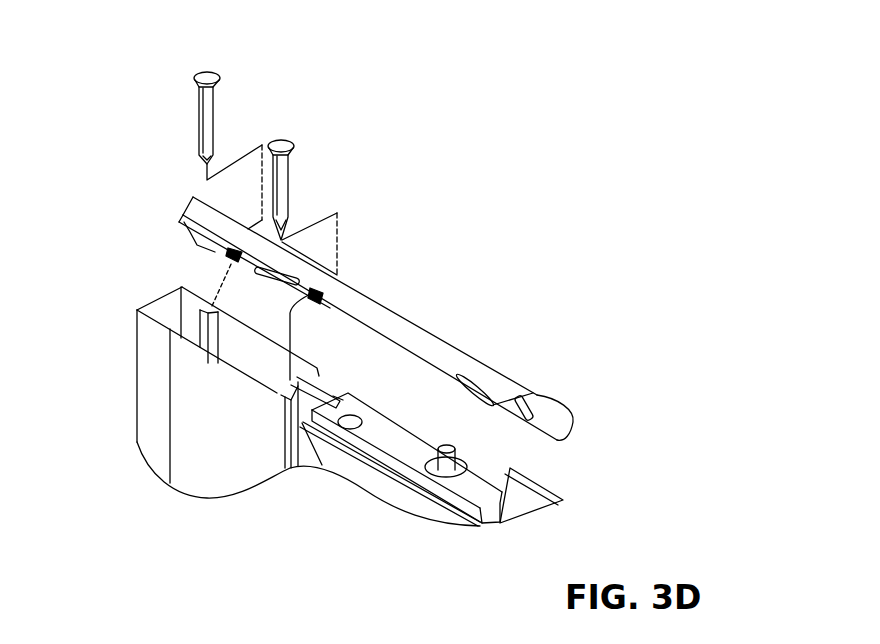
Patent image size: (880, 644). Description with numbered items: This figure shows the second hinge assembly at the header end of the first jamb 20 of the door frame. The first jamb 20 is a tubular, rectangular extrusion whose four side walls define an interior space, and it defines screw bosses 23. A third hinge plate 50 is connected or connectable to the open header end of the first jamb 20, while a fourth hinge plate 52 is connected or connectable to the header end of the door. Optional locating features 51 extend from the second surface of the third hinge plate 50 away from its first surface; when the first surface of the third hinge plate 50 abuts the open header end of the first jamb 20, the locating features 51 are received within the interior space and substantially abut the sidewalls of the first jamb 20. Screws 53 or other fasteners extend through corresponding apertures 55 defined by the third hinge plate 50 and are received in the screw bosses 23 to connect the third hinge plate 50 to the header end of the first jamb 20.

The first jamb 20 is at (150, 347).
The screw bosses 23 is at (210, 310).
The third hinge plate 50 is at (383, 314).
The locating features 51 is at (183, 223).
The fourth hinge plate 52 is at (290, 175).
The screws 53 is at (214, 118).
The apertures 55 is at (212, 258).